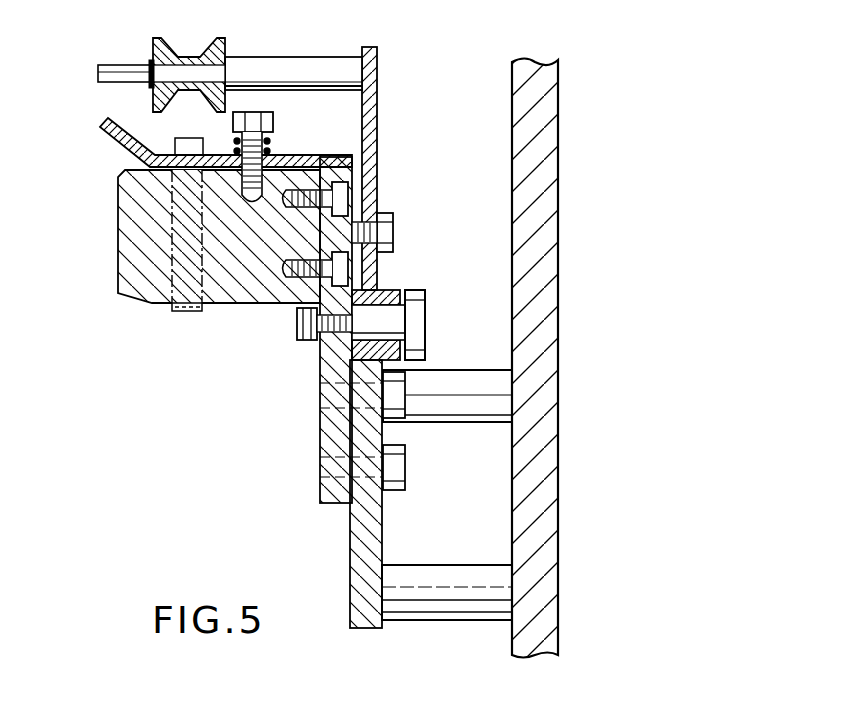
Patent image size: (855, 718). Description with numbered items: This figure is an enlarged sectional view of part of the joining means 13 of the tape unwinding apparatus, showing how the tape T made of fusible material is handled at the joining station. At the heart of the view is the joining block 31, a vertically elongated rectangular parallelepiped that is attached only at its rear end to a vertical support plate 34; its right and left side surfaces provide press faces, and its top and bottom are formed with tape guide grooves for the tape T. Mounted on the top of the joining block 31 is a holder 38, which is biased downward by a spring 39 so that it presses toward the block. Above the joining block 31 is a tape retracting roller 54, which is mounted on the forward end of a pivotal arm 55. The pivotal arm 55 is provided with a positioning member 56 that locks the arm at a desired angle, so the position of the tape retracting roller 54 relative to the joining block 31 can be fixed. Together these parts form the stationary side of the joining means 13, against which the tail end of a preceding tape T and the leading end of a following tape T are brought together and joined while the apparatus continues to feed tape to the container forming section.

The joining means 13 is at (195, 425).
The joining block 31 is at (130, 270).
The vertical support plate 34 is at (318, 437).
The holder 38 is at (108, 138).
The spring 39 is at (268, 147).
The tape retracting roller 54 is at (211, 56).
The pivotal arm 55 is at (380, 92).
The positioning member 56 is at (380, 268).
The tape T is at (183, 312).